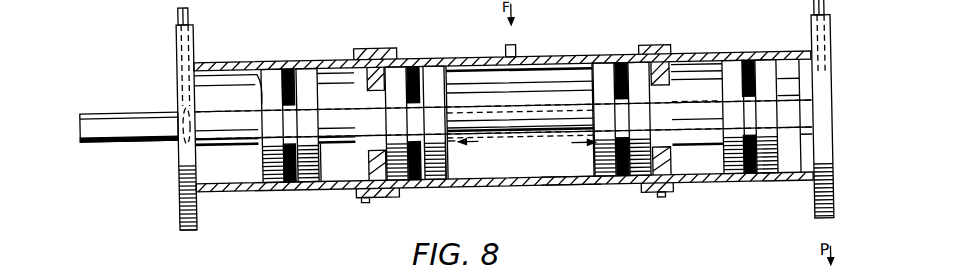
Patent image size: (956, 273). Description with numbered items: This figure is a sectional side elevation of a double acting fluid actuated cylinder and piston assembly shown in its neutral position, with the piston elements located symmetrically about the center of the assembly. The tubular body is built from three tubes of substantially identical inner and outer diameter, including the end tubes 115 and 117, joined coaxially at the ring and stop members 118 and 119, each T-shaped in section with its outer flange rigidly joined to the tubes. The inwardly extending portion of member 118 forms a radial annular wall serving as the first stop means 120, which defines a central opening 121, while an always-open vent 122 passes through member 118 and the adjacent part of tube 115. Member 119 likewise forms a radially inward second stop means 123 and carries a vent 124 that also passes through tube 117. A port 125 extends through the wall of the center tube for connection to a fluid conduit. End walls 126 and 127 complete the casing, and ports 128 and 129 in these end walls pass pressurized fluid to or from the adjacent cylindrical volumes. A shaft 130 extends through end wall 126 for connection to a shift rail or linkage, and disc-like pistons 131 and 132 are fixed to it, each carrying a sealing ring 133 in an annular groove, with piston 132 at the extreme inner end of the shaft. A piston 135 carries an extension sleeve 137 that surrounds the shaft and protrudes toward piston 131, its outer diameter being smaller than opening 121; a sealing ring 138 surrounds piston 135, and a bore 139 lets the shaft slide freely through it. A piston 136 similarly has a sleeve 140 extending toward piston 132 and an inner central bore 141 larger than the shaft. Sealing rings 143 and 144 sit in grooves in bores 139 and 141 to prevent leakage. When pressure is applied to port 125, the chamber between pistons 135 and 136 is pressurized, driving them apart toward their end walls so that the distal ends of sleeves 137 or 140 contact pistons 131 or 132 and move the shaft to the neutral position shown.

The tube 115 is at (257, 92).
The tube 117 is at (776, 54).
The ring and stop member 118 is at (383, 51).
The ring and stop member 119 is at (645, 48).
The first stop means 120 is at (320, 67).
The central opening 121 is at (352, 149).
The vent 122 is at (363, 200).
The second stop means 123 is at (677, 166).
The vent 124 is at (680, 197).
The port 125 is at (472, 50).
The end wall 126 is at (178, 36).
The end wall 127 is at (832, 28).
The port 128 is at (180, 6).
The port 129 is at (830, 15).
The shaft 130 is at (122, 100).
The piston 131 is at (262, 164).
The piston 132 is at (818, 206).
The sealing ring 133 is at (292, 184).
The piston 135 is at (450, 171).
The piston 136 is at (602, 160).
The extension sleeve 137 is at (343, 155).
The sealing ring 138 is at (398, 60).
The bore 139 is at (456, 99).
The sleeve 140 is at (757, 180).
The inner central bore 141 is at (563, 189).
The sealing ring 143 is at (458, 144).
The sealing ring 144 is at (594, 86).